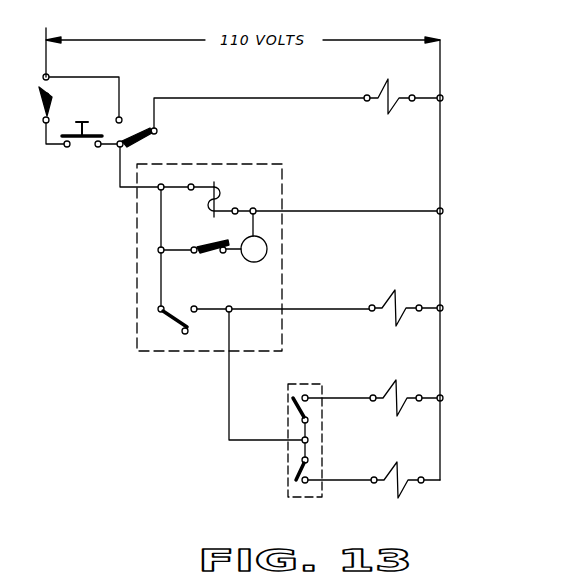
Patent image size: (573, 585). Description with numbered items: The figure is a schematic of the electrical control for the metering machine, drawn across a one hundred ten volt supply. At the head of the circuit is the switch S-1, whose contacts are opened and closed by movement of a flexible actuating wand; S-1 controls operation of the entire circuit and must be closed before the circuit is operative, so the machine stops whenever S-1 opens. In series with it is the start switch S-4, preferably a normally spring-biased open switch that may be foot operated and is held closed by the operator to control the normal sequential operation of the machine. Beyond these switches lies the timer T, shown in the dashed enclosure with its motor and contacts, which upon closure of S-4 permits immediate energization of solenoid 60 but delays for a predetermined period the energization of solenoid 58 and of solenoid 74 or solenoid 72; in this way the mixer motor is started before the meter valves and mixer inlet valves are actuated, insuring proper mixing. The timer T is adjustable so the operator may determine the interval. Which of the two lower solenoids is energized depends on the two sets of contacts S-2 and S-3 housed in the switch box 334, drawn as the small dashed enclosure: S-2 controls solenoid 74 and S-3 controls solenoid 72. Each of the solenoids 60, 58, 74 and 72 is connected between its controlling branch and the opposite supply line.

The solenoid 60 is at (396, 88).
The solenoid 58 is at (402, 294).
The solenoid 74 is at (412, 373).
The solenoid 72 is at (403, 476).
The switch box 334 is at (290, 455).
The timer T is at (136, 253).
The switch S-1 is at (38, 95).
The contacts S-2 is at (311, 408).
The contacts S-3 is at (311, 468).
The start switch S-4 is at (82, 142).